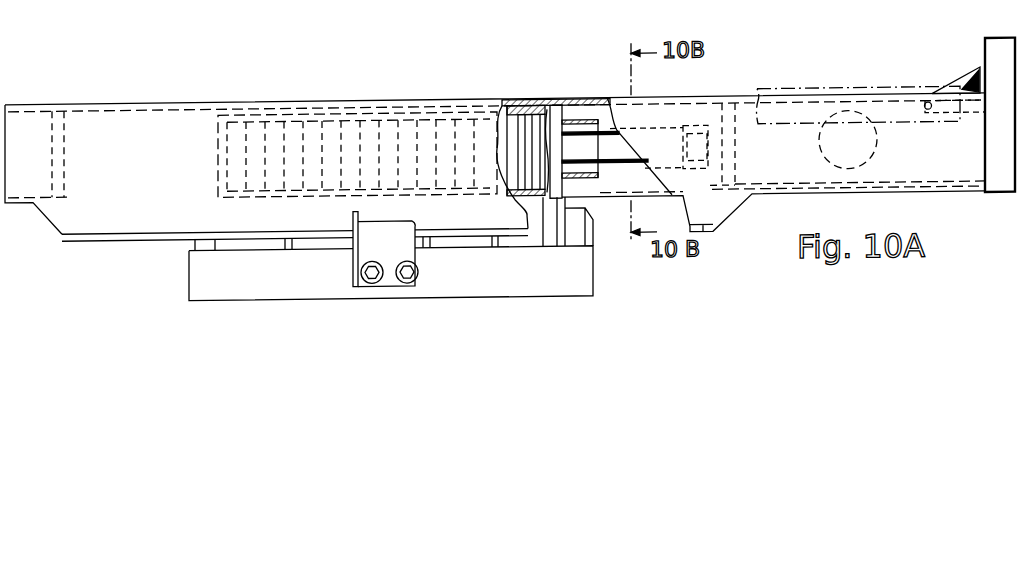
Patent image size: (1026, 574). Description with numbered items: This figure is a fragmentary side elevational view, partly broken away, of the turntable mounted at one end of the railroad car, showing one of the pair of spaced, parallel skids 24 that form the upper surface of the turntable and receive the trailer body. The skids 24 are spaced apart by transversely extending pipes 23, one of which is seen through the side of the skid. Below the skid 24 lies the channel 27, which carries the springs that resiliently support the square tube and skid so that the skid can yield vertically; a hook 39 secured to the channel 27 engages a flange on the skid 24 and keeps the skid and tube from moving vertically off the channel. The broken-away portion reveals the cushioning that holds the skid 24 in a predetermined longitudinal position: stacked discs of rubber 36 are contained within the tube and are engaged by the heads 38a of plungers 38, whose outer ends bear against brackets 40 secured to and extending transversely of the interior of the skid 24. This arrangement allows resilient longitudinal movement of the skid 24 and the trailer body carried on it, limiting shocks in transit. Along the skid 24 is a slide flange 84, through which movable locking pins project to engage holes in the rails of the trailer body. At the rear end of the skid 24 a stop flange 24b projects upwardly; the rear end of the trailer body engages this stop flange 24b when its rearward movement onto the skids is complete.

The transversely extending pipe 23 is at (878, 162).
The skid 24 is at (710, 105).
The stop flange 24b is at (985, 61).
The channel 27 is at (593, 288).
The stacked discs of rubber 36 is at (465, 123).
The plunger 38 is at (593, 112).
The plunger head 38a is at (538, 112).
The hook 39 is at (353, 262).
The bracket 40 is at (62, 175).
The slide flange 84 is at (808, 98).